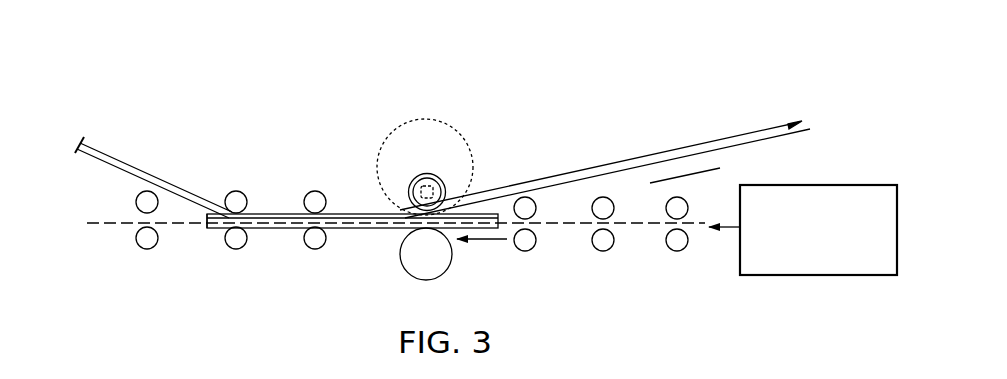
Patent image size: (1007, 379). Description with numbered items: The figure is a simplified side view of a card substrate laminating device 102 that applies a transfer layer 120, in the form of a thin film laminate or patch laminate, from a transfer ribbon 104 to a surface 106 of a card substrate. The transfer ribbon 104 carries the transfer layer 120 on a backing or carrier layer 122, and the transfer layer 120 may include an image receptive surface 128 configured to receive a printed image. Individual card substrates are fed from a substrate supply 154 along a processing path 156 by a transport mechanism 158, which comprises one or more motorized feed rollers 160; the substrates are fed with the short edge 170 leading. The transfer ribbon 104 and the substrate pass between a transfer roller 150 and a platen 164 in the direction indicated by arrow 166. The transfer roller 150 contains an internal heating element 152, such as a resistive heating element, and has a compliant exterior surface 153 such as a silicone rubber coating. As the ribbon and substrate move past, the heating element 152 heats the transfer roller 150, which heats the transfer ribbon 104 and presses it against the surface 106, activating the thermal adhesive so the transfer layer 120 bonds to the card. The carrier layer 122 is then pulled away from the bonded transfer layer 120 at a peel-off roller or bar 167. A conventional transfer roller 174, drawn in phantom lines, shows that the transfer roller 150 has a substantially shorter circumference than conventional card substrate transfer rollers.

The card substrate laminating device 102 is at (131, 58).
The transfer ribbon 104 is at (628, 160).
The surface of card substrate 106 is at (479, 212).
The transfer layer 120 is at (716, 150).
The carrier layer 122 is at (90, 140).
The image receptive surface 128 is at (744, 148).
The transfer roller 150 is at (426, 173).
The internal heating element 152 is at (413, 178).
The compliant exterior surface 153 is at (436, 176).
The substrate supply 154 is at (855, 184).
The processing path 156 is at (96, 222).
The transport mechanism 158 is at (722, 321).
The motorized feed rollers 160 is at (147, 249).
The platen 164 is at (416, 277).
The arrow indicating feed direction 166 is at (480, 242).
The peel-off roller or bar 167 is at (237, 191).
The short edge 170 is at (207, 230).
The conventional transfer roller 174 is at (390, 132).